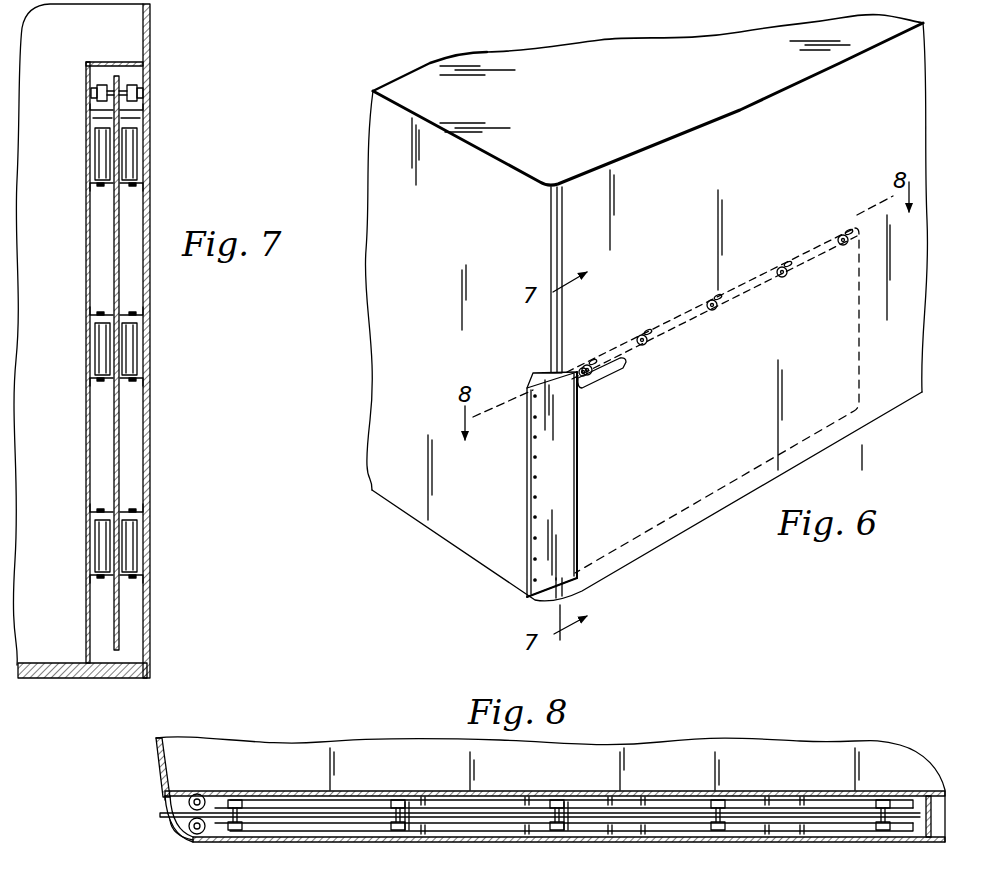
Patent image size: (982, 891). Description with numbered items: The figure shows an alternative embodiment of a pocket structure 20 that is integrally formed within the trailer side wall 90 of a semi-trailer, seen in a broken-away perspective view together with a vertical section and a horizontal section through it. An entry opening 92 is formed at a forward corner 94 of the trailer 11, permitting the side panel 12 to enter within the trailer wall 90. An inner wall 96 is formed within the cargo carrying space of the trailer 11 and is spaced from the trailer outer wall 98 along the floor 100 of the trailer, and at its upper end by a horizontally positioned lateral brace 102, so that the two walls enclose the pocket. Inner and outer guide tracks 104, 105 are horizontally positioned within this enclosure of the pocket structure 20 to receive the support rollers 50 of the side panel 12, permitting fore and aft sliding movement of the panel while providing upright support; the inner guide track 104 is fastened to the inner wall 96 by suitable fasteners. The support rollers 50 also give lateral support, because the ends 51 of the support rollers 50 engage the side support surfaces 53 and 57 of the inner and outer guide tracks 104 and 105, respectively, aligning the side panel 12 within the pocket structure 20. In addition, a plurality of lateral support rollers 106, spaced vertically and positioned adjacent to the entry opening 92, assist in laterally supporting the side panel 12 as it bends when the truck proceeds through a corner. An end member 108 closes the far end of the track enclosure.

In FIG. 6, the trailer 11 is at (357, 109).
In FIG. 7, the side panel 12 is at (118, 478).
In FIG. 6, the side panel 12 is at (551, 484).
In FIG. 8, the side panel 12 is at (160, 815).
In FIG. 7, the pocket structure 20 is at (133, 342).
In FIG. 6, the pocket structure 20 is at (571, 432).
In FIG. 8, the pocket structure 20 is at (555, 839).
In FIG. 7, the support rollers 50 is at (121, 71).
In FIG. 6, the support rollers 50 is at (781, 280).
In FIG. 8, the support rollers 50 is at (559, 817).
In FIG. 7, the ends of the support rollers 51 is at (92, 94).
In FIG. 8, the ends of the support rollers 51 is at (236, 831).
In FIG. 7, the side support surface of the inner guide track 53 is at (92, 104).
In FIG. 8, the side support surface of the inner guide track 53 is at (473, 800).
In FIG. 7, the side support surface of the outer guide track 57 is at (142, 106).
In FIG. 8, the side support surface of the outer guide track 57 is at (460, 831).
In FIG. 6, the trailer side wall 90 is at (712, 148).
In FIG. 6, the entry opening 92 is at (571, 488).
In FIG. 8, the entry opening 92 is at (180, 826).
In FIG. 6, the forward corner 94 is at (552, 238).
In FIG. 8, the forward corner 94 is at (165, 800).
In FIG. 7, the inner wall 96 is at (86, 466).
In FIG. 6, the inner wall 96 is at (713, 400).
In FIG. 8, the inner wall 96 is at (635, 792).
In FIG. 7, the trailer outer wall 98 is at (147, 217).
In FIG. 8, the trailer outer wall 98 is at (513, 842).
In FIG. 7, the floor 100 is at (40, 670).
In FIG. 8, the floor 100 is at (830, 748).
In FIG. 7, the lateral brace 102 is at (113, 62).
In FIG. 7, the inner guide track 104 is at (100, 112).
In FIG. 8, the inner guide track 104 is at (318, 806).
In FIG. 7, the outer guide track 105 is at (140, 114).
In FIG. 6, the outer guide track 105 is at (606, 380).
In FIG. 8, the outer guide track 105 is at (331, 828).
In FIG. 7, the lateral support rollers 106 is at (104, 158).
In FIG. 8, the lateral support rollers 106 is at (205, 795).
In FIG. 8, the end wall 108 is at (928, 828).